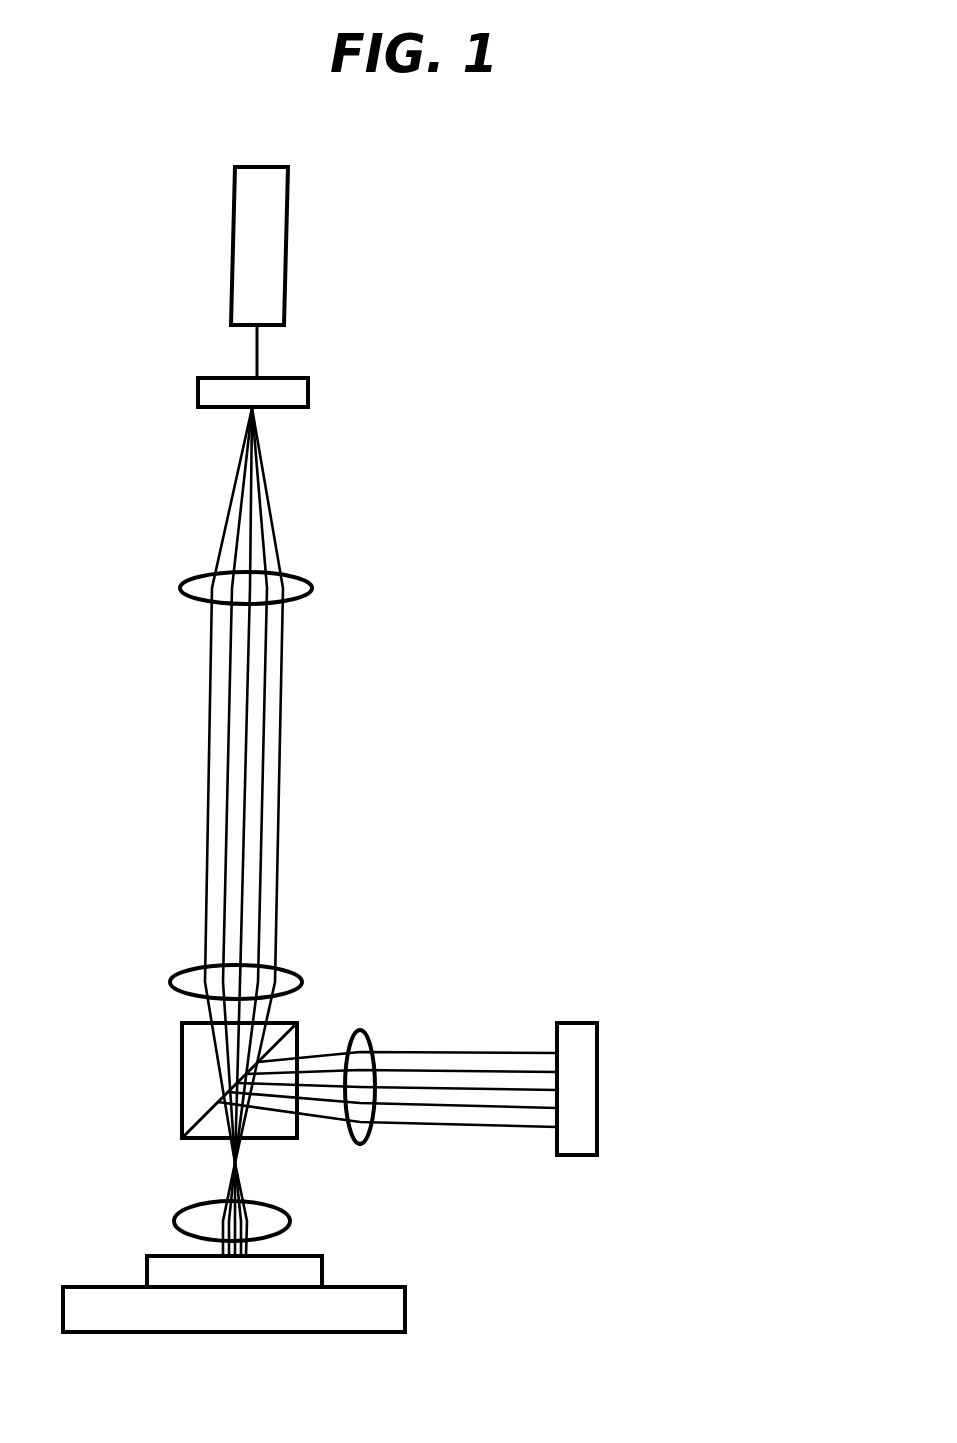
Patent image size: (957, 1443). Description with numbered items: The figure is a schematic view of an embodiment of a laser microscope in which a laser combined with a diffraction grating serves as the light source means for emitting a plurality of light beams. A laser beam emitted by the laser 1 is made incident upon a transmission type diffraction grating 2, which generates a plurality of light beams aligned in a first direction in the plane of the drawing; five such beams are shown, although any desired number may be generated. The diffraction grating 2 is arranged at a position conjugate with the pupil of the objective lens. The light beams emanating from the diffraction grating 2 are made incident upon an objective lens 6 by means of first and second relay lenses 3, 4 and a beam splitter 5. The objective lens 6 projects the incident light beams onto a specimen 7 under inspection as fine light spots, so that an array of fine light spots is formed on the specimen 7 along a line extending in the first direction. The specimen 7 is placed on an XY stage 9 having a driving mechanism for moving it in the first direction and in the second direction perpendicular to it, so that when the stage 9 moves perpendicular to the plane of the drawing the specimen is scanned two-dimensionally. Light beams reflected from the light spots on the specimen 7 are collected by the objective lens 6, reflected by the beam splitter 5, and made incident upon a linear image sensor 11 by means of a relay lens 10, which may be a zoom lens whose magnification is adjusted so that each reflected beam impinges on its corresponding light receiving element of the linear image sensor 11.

The laser 1 is at (288, 248).
The transmission type diffraction grating 2 is at (310, 392).
The first relay lens 3 is at (312, 592).
The second relay lens 4 is at (300, 980).
The beam splitter 5 is at (182, 1060).
The objective lens 6 is at (290, 1217).
The specimen 7 is at (158, 1255).
The XY stage 9 is at (405, 1307).
The relay lens 10 is at (365, 1027).
The linear image sensor 11 is at (585, 1023).